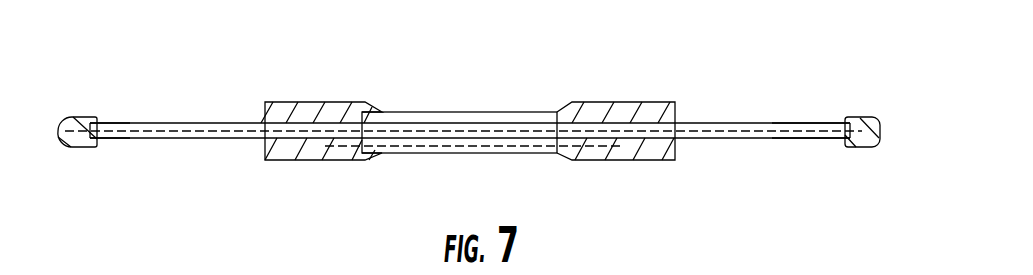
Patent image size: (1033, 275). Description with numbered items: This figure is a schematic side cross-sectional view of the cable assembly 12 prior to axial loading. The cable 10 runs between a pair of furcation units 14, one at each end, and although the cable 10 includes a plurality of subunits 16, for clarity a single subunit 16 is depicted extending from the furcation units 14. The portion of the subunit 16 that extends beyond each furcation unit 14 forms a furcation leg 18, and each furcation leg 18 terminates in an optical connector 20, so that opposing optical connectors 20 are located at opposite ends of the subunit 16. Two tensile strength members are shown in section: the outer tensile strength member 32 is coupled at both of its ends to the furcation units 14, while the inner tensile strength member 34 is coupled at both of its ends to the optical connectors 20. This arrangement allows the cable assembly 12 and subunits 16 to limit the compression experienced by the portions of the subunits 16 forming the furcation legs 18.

The cable 10 is at (433, 112).
The cable assembly 12 is at (515, 73).
The furcation unit 14 is at (307, 110).
The subunit 16 is at (221, 139).
The furcation leg 18 is at (469, 131).
The optical connector 20 is at (67, 150).
The outer tensile strength member 32 is at (574, 146).
The inner tensile strength member 34 is at (128, 139).